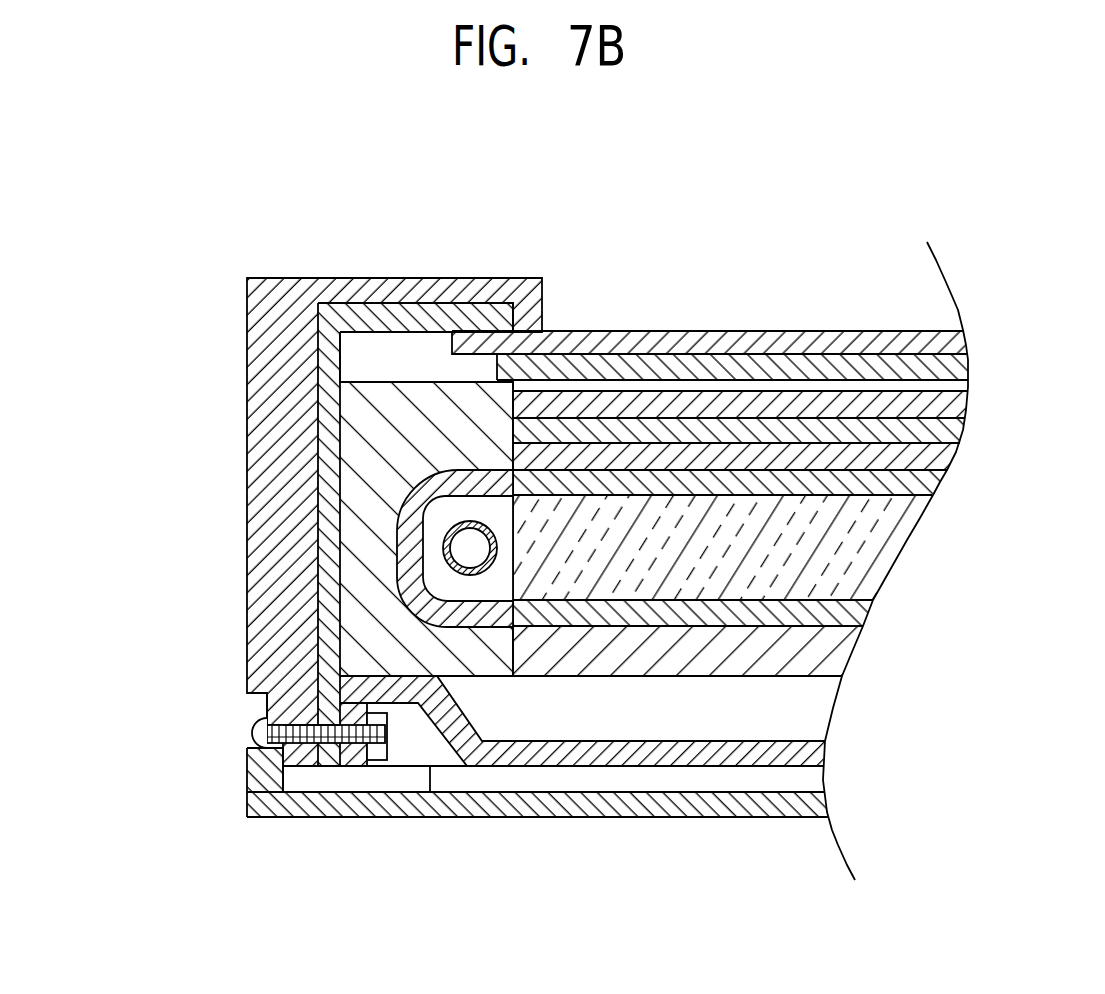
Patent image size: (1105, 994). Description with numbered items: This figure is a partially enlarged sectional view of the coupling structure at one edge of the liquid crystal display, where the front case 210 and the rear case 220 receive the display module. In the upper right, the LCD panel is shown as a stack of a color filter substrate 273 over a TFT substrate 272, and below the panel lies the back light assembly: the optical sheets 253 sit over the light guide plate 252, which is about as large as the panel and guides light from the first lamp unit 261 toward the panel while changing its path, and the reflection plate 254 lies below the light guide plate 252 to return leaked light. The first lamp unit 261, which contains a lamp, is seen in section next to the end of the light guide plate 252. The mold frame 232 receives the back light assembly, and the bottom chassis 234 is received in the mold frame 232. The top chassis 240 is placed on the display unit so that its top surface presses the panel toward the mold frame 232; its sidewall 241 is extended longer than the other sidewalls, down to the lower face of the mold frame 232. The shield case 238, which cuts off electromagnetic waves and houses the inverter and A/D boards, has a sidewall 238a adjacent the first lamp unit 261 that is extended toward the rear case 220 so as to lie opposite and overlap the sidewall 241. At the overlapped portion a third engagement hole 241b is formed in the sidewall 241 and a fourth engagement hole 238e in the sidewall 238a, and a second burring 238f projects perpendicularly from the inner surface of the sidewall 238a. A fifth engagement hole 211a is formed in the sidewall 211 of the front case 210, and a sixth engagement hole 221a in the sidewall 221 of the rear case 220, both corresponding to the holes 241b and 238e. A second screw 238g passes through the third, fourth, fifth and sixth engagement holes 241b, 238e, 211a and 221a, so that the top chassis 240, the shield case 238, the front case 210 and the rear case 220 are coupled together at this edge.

The front case 210 is at (413, 285).
The sidewall of the front case 211 is at (273, 352).
The fifth engagement hole 211a is at (253, 693).
The rear case 220 is at (815, 805).
The sidewall of the rear case 221 is at (262, 781).
The sixth engagement hole 221a is at (273, 760).
The mold frame 232 is at (392, 430).
The bottom chassis 234 is at (822, 660).
The shield case 238 is at (571, 758).
The sidewall of the shield case 238a is at (343, 766).
The fourth engagement hole 238e is at (396, 743).
The second burring 238f is at (377, 762).
The second screw 238g is at (262, 733).
The top chassis 240 is at (330, 300).
The sidewall of the top chassis 241 is at (330, 527).
The third engagement hole 241b is at (325, 712).
The light guide plate 252 is at (873, 548).
The optical sheets 253 is at (975, 392).
The reflection plate 254 is at (702, 615).
The first lamp unit 261 is at (438, 460).
The TFT substrate 272 is at (960, 362).
The color filter substrate 273 is at (968, 331).